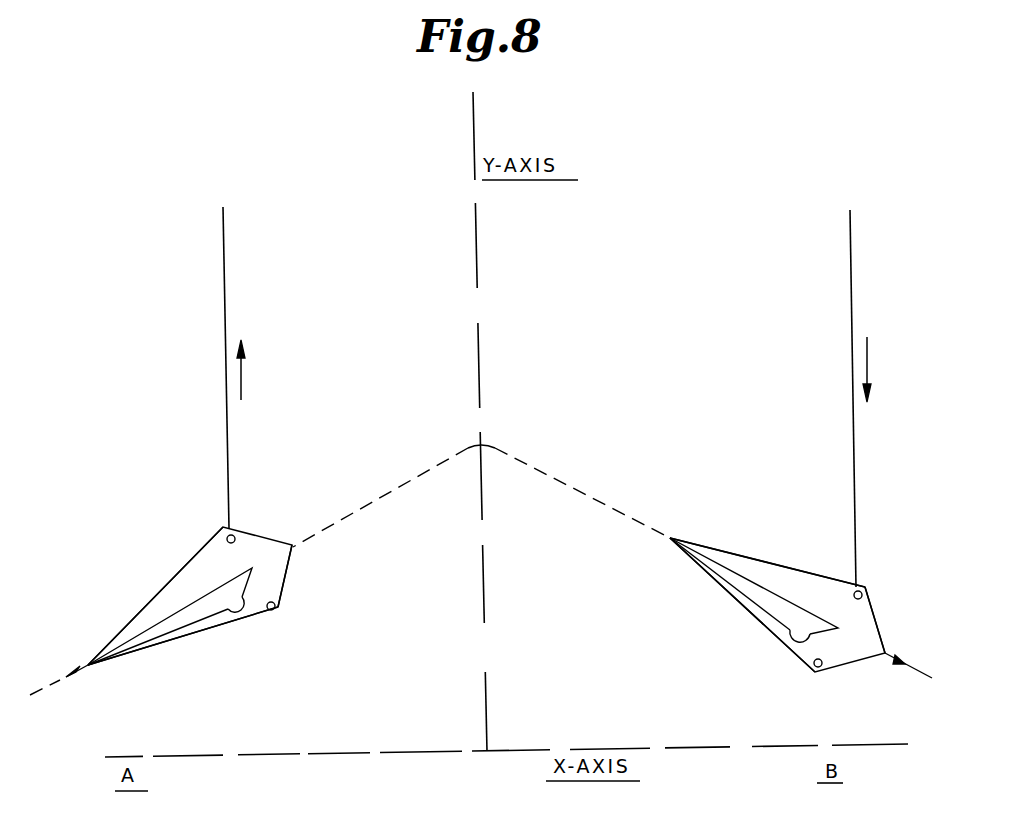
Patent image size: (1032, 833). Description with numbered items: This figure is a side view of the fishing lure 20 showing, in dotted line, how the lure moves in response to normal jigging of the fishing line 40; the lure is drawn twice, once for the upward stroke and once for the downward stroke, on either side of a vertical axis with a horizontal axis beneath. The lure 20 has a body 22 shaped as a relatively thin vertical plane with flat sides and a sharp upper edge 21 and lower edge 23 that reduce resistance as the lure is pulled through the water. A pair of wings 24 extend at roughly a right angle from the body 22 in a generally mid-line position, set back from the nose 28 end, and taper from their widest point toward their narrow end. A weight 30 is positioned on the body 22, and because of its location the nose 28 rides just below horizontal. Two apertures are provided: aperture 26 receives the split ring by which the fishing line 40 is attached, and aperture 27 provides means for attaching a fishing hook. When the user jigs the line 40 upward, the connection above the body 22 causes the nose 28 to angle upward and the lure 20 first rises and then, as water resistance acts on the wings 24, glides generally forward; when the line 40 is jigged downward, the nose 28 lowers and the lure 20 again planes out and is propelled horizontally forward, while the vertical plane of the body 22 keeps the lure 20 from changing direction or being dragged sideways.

The fishing lure 20 is at (223, 647).
The upper edge 21 is at (182, 566).
The body 22 is at (160, 610).
The lower edge 23 is at (138, 657).
The wings 24 is at (254, 571).
The aperture 26 is at (257, 540).
The aperture 27 is at (280, 606).
The nose 28 is at (295, 547).
The weight 30 is at (248, 620).
The fishing line 40 is at (226, 323).